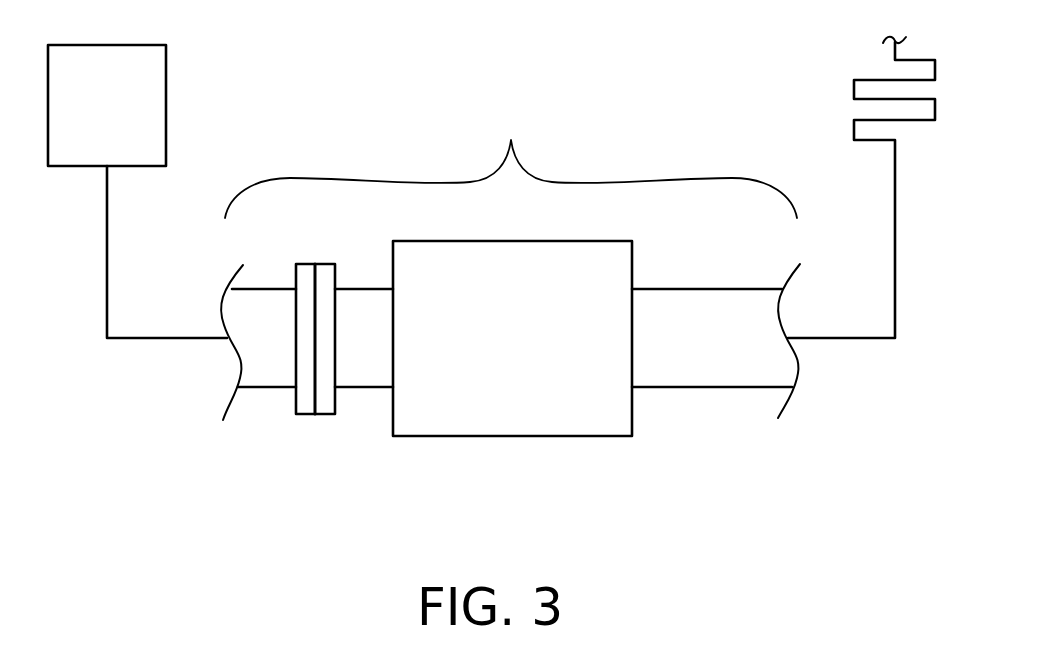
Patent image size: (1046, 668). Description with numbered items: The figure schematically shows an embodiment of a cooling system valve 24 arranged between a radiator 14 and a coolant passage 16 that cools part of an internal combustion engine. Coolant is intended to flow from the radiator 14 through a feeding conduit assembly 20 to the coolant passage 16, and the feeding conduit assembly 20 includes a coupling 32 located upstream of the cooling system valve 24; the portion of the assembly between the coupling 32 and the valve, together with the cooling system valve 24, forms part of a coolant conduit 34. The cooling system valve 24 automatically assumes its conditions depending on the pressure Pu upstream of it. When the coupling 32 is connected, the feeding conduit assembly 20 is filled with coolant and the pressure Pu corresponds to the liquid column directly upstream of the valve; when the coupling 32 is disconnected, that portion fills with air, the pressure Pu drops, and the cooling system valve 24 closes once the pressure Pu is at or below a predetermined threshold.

The radiator 14 is at (167, 103).
The coolant passage 16 is at (854, 90).
The feeding conduit assembly 20 is at (305, 511).
The cooling system valve 24 is at (511, 438).
The coupling 32 is at (303, 417).
The coolant conduit 34 is at (511, 163).
The pressure upstream the cooling system valve Pu is at (372, 348).